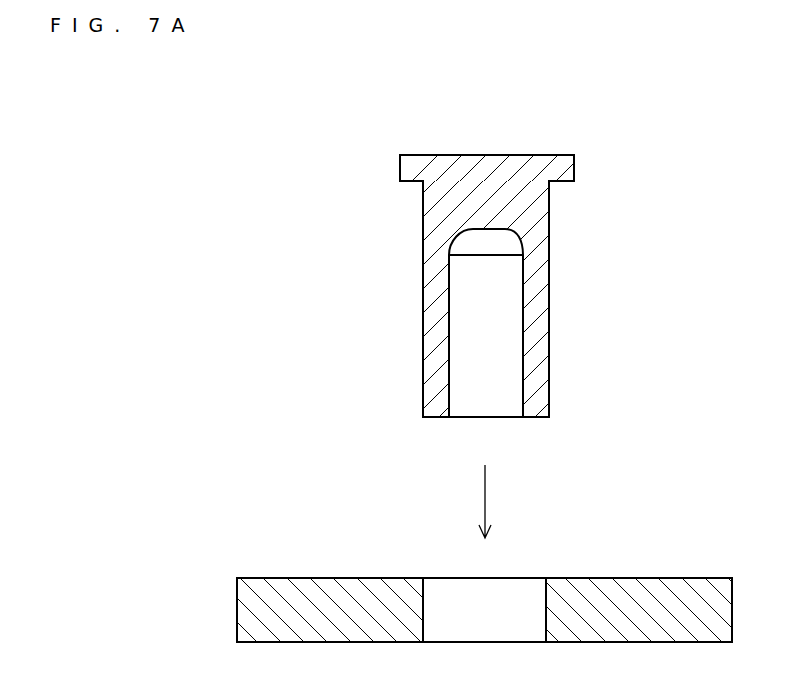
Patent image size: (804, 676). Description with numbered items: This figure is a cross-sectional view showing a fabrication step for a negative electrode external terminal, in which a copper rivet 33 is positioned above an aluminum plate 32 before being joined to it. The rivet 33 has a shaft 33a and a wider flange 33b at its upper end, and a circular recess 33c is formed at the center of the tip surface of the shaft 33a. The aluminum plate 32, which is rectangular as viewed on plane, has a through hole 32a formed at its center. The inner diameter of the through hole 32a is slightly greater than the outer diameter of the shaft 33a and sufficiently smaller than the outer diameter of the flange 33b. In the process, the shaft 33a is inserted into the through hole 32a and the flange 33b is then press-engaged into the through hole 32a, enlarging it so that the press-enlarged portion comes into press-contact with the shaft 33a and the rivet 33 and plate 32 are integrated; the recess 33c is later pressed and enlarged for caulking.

The rivet 33 is at (595, 318).
The shaft 33a is at (549, 345).
The flange 33b is at (575, 170).
The recess 33c is at (449, 377).
The aluminum plate 32 is at (668, 587).
The through hole 32a is at (545, 597).